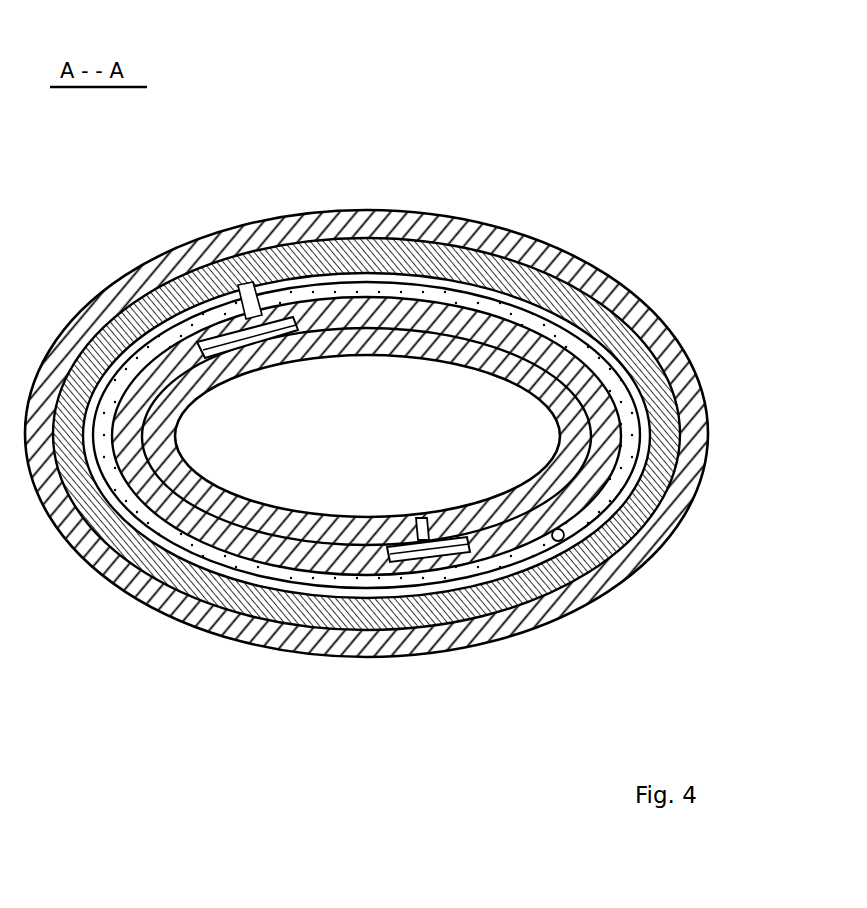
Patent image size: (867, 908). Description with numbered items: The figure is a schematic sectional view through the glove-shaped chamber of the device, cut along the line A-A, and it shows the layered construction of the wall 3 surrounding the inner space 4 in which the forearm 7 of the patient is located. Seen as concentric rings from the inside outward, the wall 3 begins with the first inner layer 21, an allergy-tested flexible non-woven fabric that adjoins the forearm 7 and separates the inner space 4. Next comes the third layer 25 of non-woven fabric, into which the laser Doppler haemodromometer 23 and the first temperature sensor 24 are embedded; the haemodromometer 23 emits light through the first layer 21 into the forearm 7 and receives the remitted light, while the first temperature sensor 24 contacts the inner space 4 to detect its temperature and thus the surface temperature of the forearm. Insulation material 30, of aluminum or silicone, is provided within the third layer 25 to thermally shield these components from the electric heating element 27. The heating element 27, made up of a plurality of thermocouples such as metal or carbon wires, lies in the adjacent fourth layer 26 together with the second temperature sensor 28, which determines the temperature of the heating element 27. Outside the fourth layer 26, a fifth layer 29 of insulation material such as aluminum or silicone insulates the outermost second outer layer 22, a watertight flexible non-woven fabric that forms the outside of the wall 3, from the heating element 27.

The wall 3 is at (402, 383).
The inner space 4 is at (367, 436).
The forearm 7 is at (367, 436).
The first inner layer 21 is at (366, 346).
The second outer layer 22 is at (537, 350).
The laser Doppler haemodromometer 23 is at (267, 333).
The first temperature sensor 24 is at (437, 543).
The third layer 25 is at (573, 330).
The fourth layer 26 is at (623, 343).
The electric heating element 27 is at (637, 420).
The second temperature sensor 28 is at (565, 537).
The fifth layer 29 is at (641, 316).
The insulation material 30 is at (197, 353).